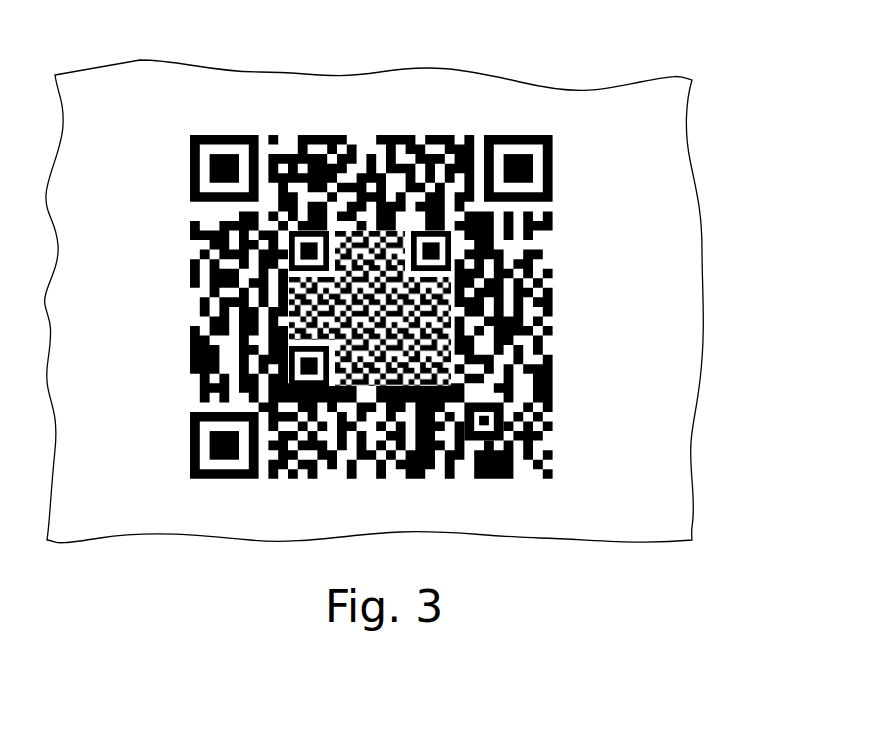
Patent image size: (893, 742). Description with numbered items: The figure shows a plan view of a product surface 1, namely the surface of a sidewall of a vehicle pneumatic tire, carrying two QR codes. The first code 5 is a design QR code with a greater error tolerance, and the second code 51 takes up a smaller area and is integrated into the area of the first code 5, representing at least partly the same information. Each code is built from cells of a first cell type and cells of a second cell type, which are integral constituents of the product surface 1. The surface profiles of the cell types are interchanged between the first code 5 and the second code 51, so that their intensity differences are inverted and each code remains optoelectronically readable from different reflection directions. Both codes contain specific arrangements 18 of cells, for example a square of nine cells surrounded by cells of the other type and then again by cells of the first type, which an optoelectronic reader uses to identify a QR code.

The product surface 1 is at (660, 117).
The first code 5 is at (347, 263).
The specific arrangement 18 is at (208, 125).
The second code 51 is at (443, 374).